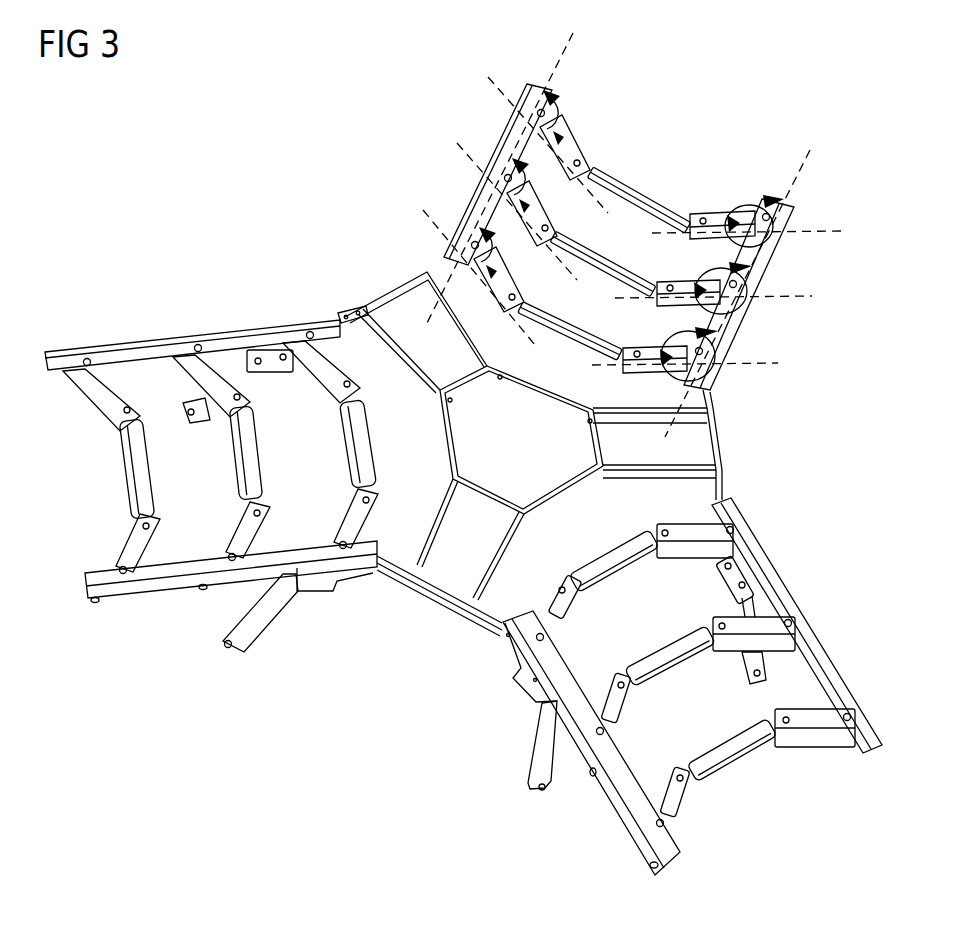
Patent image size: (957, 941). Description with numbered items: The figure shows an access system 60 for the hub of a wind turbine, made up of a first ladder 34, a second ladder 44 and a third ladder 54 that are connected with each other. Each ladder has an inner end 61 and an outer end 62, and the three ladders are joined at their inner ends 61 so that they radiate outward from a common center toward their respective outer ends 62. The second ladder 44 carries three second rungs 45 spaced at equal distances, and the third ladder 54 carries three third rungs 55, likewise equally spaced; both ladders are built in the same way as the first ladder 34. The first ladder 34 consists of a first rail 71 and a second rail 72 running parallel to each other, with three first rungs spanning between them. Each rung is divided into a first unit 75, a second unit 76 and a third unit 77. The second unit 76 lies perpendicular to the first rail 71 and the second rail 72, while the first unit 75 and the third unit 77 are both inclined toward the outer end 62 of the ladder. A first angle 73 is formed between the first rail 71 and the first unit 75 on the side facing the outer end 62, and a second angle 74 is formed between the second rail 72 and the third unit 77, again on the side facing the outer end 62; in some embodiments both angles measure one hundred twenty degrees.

The first ladder 34 is at (434, 162).
The second ladder 44 is at (790, 568).
The second rungs 45 is at (620, 552).
The third ladder 54 is at (177, 315).
The third rungs 55 is at (258, 455).
The access system 60 is at (262, 170).
The inner end 61 is at (383, 425).
The outer end 62 is at (653, 170).
The first rail 71 is at (463, 227).
The second rail 72 is at (762, 281).
The first angle 73 is at (567, 118).
The second angle 74 is at (742, 215).
The first unit 75 is at (518, 138).
The second unit 76 is at (645, 216).
The third unit 77 is at (770, 246).